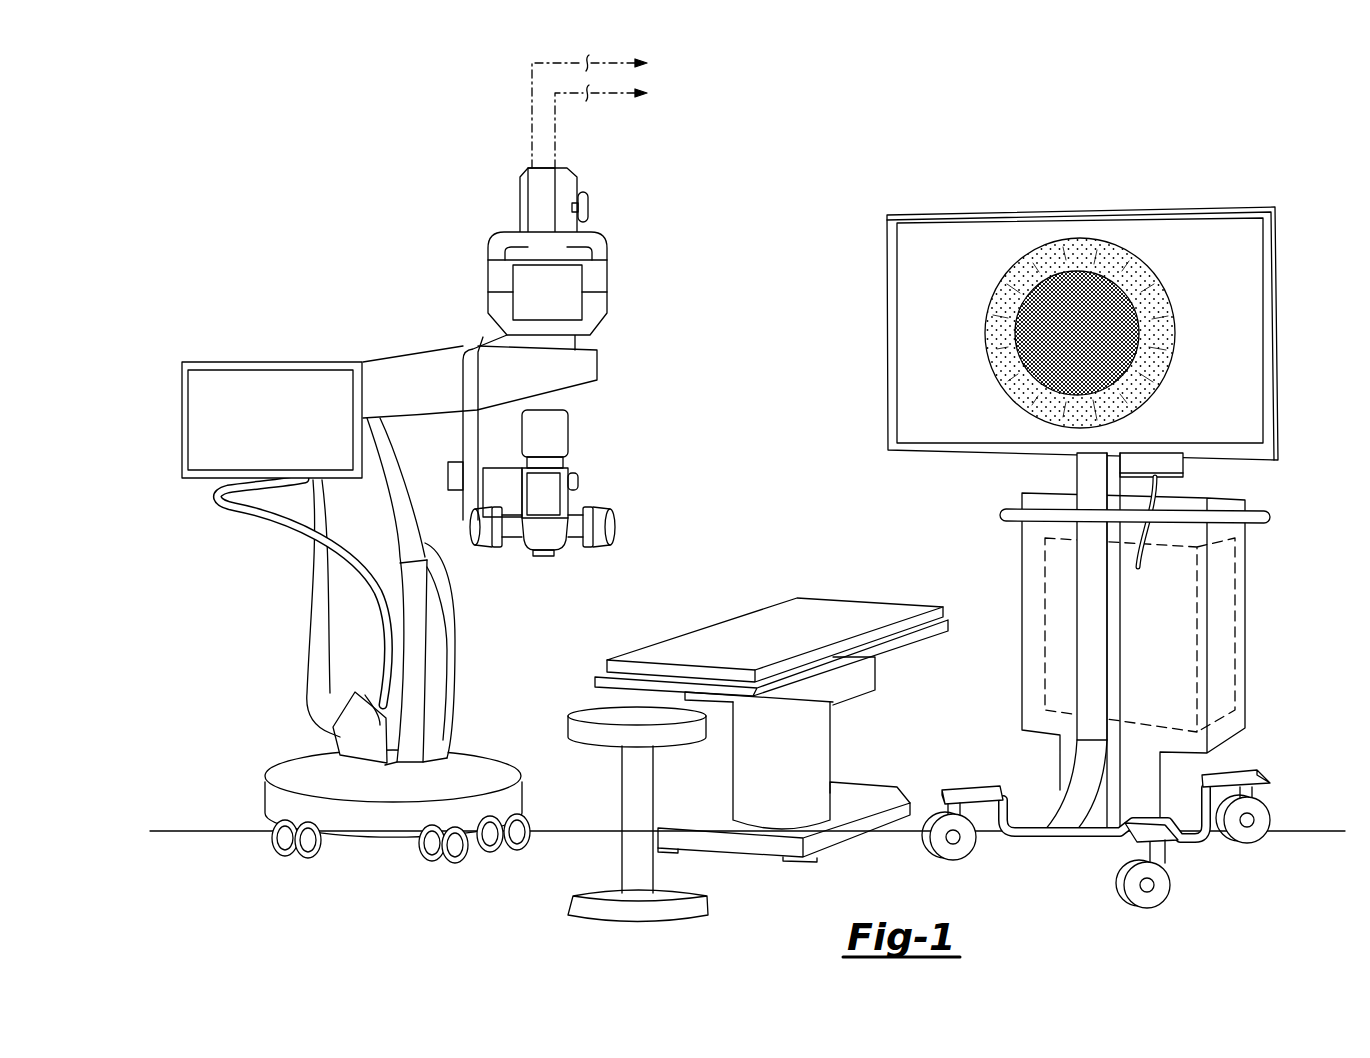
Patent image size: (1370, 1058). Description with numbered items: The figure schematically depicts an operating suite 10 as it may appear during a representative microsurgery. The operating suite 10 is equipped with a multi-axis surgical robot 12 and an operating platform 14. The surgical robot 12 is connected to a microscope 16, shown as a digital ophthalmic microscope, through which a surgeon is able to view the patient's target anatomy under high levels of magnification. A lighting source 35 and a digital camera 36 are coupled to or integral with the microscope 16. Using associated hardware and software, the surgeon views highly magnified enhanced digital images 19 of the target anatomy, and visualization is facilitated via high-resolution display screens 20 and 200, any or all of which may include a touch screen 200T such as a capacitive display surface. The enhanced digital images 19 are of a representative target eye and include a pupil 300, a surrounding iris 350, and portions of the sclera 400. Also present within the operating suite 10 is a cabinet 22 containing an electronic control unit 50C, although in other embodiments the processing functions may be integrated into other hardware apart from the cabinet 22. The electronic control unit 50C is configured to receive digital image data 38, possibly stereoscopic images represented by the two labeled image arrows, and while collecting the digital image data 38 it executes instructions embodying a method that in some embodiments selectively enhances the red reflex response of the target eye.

The operating suite 10 is at (432, 145).
The multi-axis surgical robot 12 is at (328, 320).
The operating platform 14 is at (731, 642).
The microscope 16 is at (624, 454).
The enhanced digital images 19 is at (1195, 327).
The high-resolution display screen 20 is at (1247, 168).
The cabinet 22 is at (1245, 592).
The lighting source 35 is at (543, 556).
The digital camera 36 is at (552, 497).
The digital image data 38 is at (752, 43).
The electronic control unit 50C is at (1222, 667).
The high-resolution display screen 200 is at (555, 311).
The touch screen 200T is at (225, 424).
The pupil 300 is at (1086, 353).
The iris 350 is at (1068, 245).
The sclera 400 is at (944, 277).